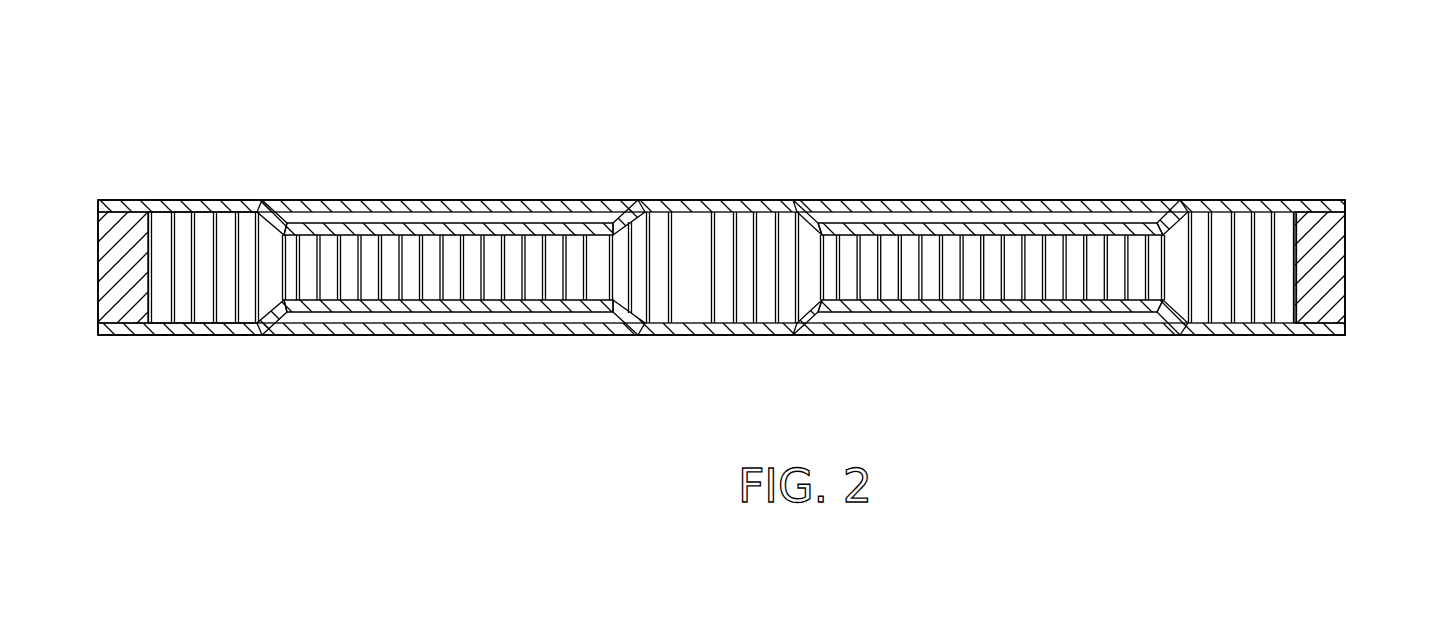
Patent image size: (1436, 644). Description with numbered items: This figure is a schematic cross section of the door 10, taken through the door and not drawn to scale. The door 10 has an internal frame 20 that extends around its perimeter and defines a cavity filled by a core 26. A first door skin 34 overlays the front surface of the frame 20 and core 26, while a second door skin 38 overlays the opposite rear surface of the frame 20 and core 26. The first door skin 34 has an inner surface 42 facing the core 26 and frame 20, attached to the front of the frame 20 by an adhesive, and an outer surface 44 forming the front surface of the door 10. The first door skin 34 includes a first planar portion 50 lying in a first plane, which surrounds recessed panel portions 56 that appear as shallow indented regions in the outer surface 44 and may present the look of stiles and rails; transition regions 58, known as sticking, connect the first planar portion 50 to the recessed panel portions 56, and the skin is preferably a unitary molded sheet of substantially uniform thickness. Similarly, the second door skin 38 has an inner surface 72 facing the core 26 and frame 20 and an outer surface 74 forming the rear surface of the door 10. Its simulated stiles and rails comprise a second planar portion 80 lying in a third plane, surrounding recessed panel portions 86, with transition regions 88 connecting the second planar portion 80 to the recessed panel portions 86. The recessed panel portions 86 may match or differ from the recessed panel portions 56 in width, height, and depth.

The door 10 is at (1240, 70).
The internal frame 20 is at (1340, 262).
The core 26 is at (1202, 310).
The first door skin 34 is at (695, 203).
The second door skin 38 is at (628, 313).
The inner surface 42 is at (198, 216).
The outer surface 44 is at (207, 208).
The first planar portion 50 is at (776, 207).
The recessed panel portions 56 is at (421, 223).
The transition regions 58 is at (834, 207).
The inner surface 72 is at (190, 318).
The outer surface 74 is at (208, 337).
The second planar portion 80 is at (729, 335).
The recessed panel portions 86 is at (440, 305).
The transition regions 88 is at (278, 320).